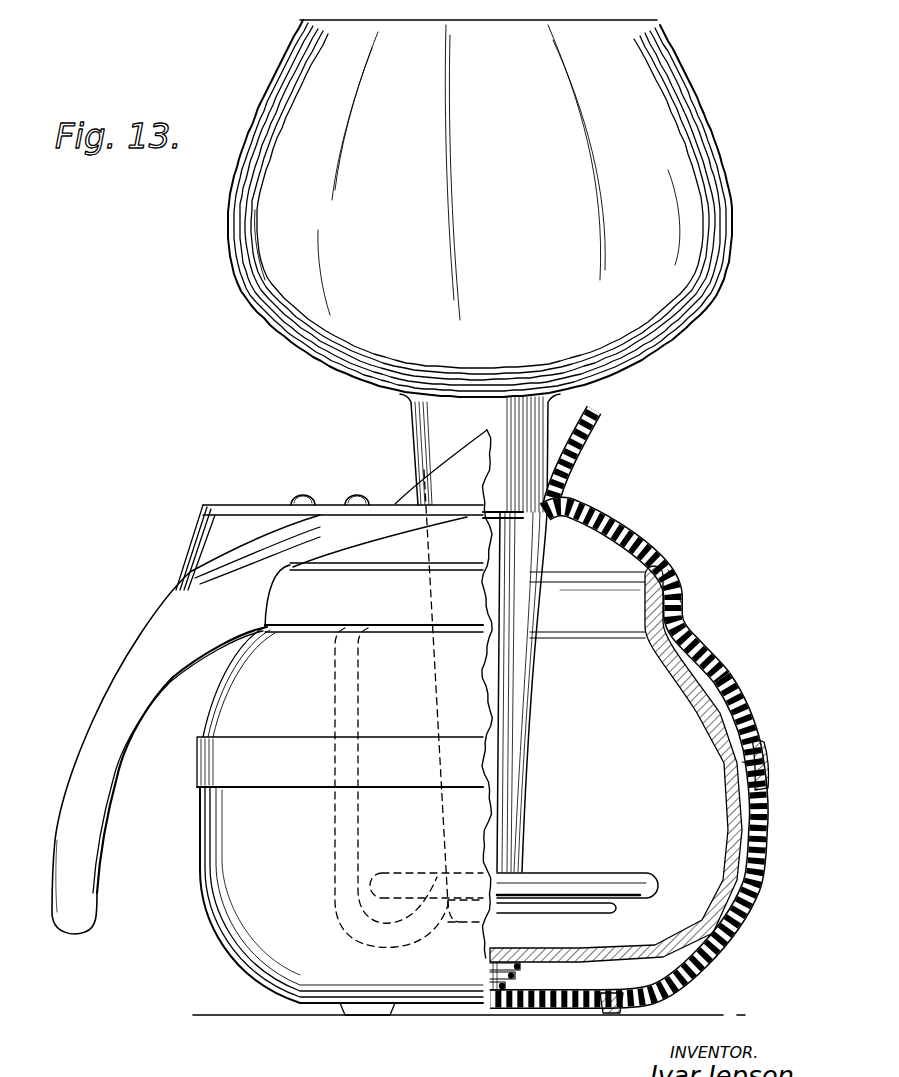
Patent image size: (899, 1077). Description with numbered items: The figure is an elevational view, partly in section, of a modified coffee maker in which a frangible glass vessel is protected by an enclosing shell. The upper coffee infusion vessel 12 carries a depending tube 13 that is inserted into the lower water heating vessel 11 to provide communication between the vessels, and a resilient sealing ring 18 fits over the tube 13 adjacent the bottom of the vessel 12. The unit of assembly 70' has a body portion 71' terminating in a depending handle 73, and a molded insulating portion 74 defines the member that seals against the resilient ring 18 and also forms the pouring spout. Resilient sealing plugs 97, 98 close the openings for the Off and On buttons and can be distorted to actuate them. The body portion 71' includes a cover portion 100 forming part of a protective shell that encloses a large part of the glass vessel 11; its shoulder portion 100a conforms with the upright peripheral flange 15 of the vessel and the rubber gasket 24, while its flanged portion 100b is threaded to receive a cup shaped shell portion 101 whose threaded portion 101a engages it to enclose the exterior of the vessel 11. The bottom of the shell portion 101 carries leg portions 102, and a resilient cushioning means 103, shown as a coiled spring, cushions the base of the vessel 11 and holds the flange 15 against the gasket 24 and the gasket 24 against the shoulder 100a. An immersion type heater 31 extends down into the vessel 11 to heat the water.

The upper coffee infusion chamber or vessel 12 is at (688, 128).
The resilient sealing ring 18 is at (410, 422).
The depending tube 13 is at (520, 770).
The molded insulating portion defining sealing member and pouring spout 74 is at (580, 447).
The cover portion 100 is at (636, 530).
The shoulder portion 100a is at (674, 564).
The flanged portion 100b is at (764, 754).
The rubber gasket 24 is at (684, 590).
The lower water heating chamber or vessel 11 is at (707, 684).
The upright peripheral flange 15 is at (617, 618).
The cup shaped shell portion 101 is at (760, 899).
The threaded portion 101a is at (752, 769).
The leg portions 102 is at (373, 1010).
The resilient cushioning means 103 is at (512, 990).
The unit of assembly 70' is at (349, 520).
The resilient sealing plug 97 is at (305, 492).
The resilient sealing plug 98 is at (358, 493).
The body portion 71' is at (292, 550).
The depending handle 73 is at (88, 722).
The immersion type heater 31 is at (335, 840).